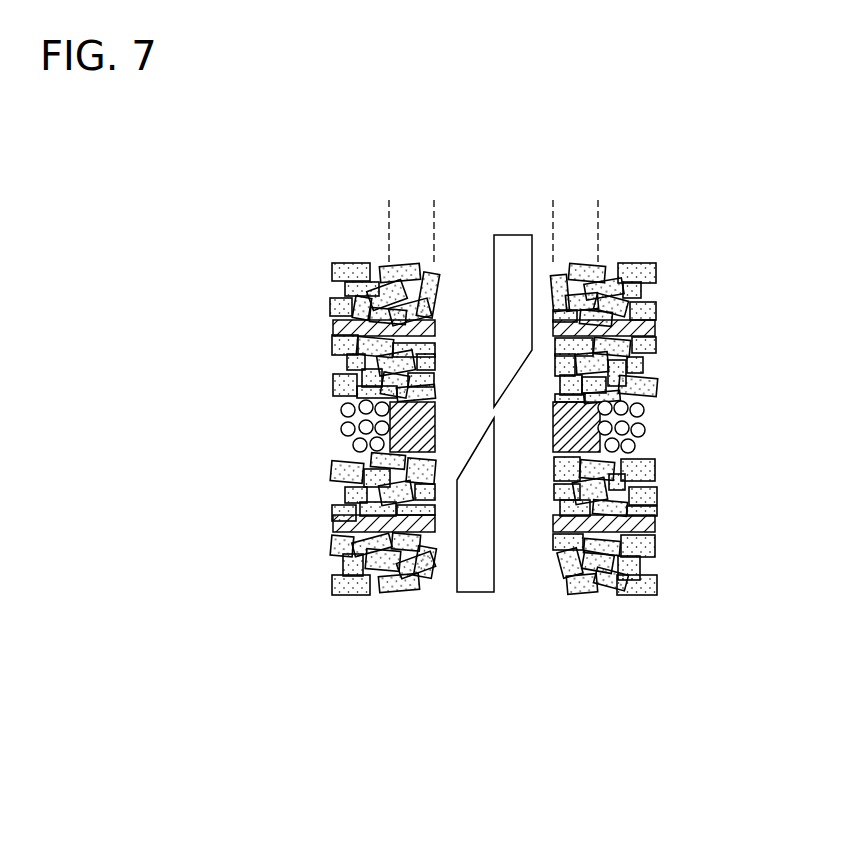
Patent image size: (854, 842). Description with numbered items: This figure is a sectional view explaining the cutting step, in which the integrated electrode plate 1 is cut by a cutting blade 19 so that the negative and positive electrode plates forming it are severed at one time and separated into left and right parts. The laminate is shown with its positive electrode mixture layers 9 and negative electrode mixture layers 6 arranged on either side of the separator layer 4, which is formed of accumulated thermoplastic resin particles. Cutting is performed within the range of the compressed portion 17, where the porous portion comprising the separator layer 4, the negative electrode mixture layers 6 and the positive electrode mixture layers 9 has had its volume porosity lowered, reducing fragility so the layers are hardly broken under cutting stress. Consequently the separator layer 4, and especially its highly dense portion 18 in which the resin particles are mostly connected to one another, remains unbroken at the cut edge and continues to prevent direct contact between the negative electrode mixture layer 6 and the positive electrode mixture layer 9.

The integrated electrode plate 1 is at (320, 598).
The separator layer 4 is at (343, 414).
The negative electrode mixture layer 6 is at (330, 455).
The positive electrode mixture layer 9 is at (330, 268).
The compressed portion 17 is at (435, 192).
The highly dense portion 18 is at (340, 436).
The cutting blade 19 is at (510, 242).